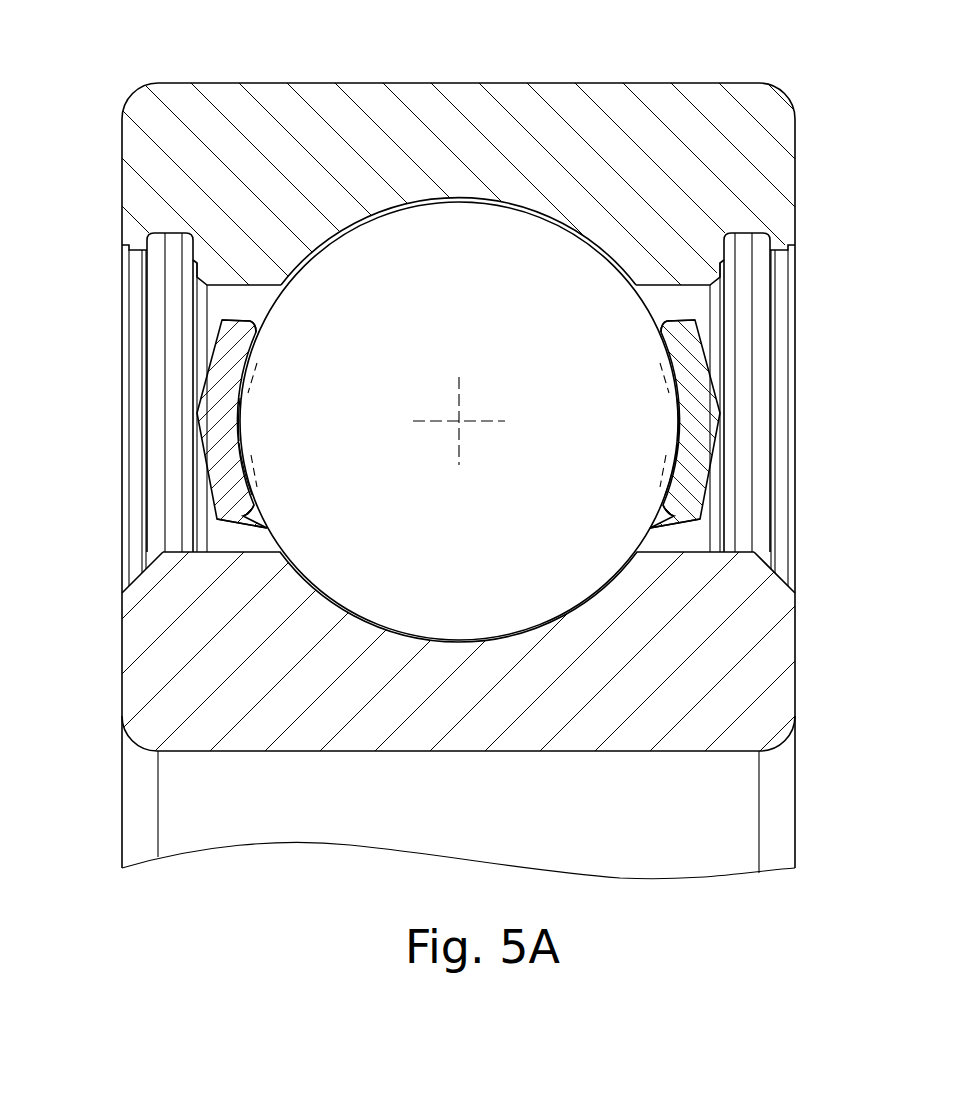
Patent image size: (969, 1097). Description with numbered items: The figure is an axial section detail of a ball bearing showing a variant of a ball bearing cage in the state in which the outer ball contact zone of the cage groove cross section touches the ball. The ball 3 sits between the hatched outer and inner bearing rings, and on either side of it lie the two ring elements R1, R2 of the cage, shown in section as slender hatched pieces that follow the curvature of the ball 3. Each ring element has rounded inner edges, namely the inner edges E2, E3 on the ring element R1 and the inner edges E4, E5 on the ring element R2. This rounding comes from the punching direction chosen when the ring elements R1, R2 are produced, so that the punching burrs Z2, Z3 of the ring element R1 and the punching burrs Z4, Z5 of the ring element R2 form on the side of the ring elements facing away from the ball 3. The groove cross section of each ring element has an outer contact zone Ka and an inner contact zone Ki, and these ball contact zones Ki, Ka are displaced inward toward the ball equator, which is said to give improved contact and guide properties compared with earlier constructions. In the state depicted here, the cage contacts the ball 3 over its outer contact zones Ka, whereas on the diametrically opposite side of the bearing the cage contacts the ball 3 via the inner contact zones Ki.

The ball 3 is at (455, 280).
The ring element R1 is at (212, 403).
The ring element R2 is at (705, 403).
The punching burr Z2 is at (212, 318).
The punching burr Z3 is at (217, 520).
The punching burr Z4 is at (690, 327).
The punching burr Z5 is at (697, 522).
The inner edge E2 is at (257, 326).
The inner edge E3 is at (250, 505).
The inner edge E4 is at (660, 326).
The inner edge E5 is at (660, 512).
The outer ball contact zone Ka is at (458, 381).
The inner ball contact zone Ki is at (458, 469).